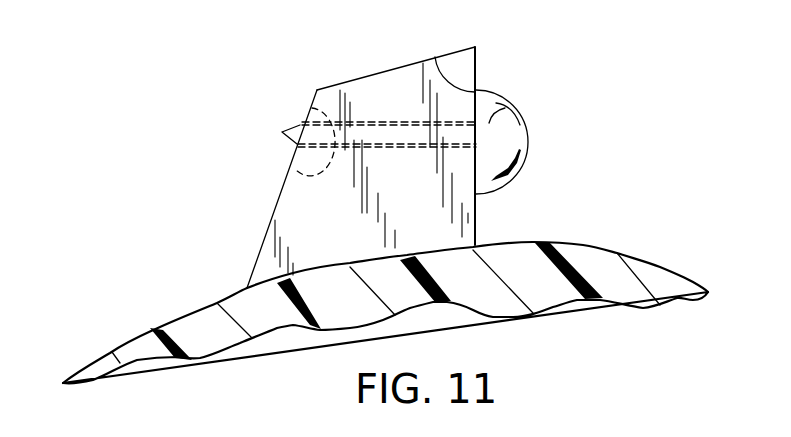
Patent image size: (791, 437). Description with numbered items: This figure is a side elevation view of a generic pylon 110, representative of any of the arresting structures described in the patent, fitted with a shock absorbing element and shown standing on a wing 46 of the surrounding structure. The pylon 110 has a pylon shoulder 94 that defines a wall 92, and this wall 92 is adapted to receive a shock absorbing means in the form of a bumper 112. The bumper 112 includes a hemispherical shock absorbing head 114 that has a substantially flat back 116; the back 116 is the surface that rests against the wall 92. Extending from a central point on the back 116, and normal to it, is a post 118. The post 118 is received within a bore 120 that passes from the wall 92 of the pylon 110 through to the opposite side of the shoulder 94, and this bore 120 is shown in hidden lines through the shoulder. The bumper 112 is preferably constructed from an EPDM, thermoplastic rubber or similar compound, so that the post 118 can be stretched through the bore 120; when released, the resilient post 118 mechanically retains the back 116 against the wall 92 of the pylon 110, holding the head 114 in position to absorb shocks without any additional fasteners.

The wing 46 is at (203, 322).
The pylon 110 is at (312, 76).
The pylon shoulder 94 is at (397, 67).
The back 116 is at (434, 56).
The wall 92 is at (477, 63).
The bumper 112 is at (530, 134).
The shock absorbing head 114 is at (497, 92).
The post 118 is at (305, 108).
The bore 120 is at (290, 176).